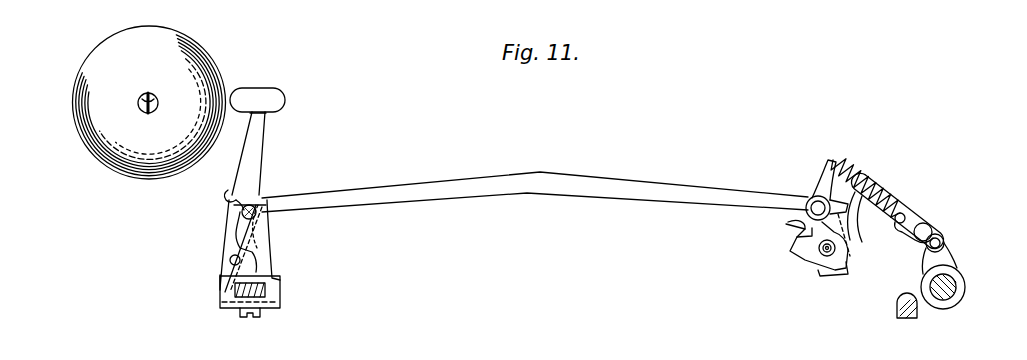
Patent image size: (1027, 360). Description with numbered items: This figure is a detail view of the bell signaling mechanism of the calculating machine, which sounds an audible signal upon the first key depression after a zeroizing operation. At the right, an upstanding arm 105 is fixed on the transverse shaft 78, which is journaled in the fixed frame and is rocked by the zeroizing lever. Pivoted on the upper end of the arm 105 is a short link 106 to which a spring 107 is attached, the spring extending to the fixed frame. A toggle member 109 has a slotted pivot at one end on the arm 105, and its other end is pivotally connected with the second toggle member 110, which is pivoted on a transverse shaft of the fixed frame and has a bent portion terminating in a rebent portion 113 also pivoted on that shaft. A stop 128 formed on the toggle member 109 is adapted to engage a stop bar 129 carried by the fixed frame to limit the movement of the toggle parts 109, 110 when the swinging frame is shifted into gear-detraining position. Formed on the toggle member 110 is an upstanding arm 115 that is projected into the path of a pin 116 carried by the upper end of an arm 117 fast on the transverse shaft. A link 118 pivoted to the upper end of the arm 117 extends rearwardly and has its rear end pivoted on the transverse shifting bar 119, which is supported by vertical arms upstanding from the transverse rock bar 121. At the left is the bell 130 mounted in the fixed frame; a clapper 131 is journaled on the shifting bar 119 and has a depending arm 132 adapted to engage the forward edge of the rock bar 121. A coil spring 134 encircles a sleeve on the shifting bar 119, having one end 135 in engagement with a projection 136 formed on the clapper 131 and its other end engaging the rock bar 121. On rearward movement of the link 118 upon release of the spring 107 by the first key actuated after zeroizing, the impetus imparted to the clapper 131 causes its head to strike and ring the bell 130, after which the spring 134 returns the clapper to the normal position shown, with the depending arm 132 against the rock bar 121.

The bell 130 is at (185, 66).
The clapper 131 is at (258, 137).
The transverse shifting bar 119 is at (252, 206).
The end of coil spring 135 is at (230, 196).
The projection 136 is at (240, 205).
The coil spring 134 is at (228, 240).
The depending arm 132 is at (272, 262).
The transverse rock bar 121 is at (270, 281).
The link 118 is at (708, 186).
The toggle member 110 is at (830, 176).
The pin 116 is at (814, 203).
The arm 117 is at (790, 224).
The upstanding arm 115 is at (792, 248).
The rebent portion 113 is at (838, 270).
The stop 128 is at (862, 240).
The spring 107 is at (860, 182).
The toggle member 109 is at (912, 222).
The short link 106 is at (944, 240).
The upstanding arm 105 is at (940, 258).
The transverse shaft 78 is at (963, 288).
The stop bar 129 is at (914, 312).